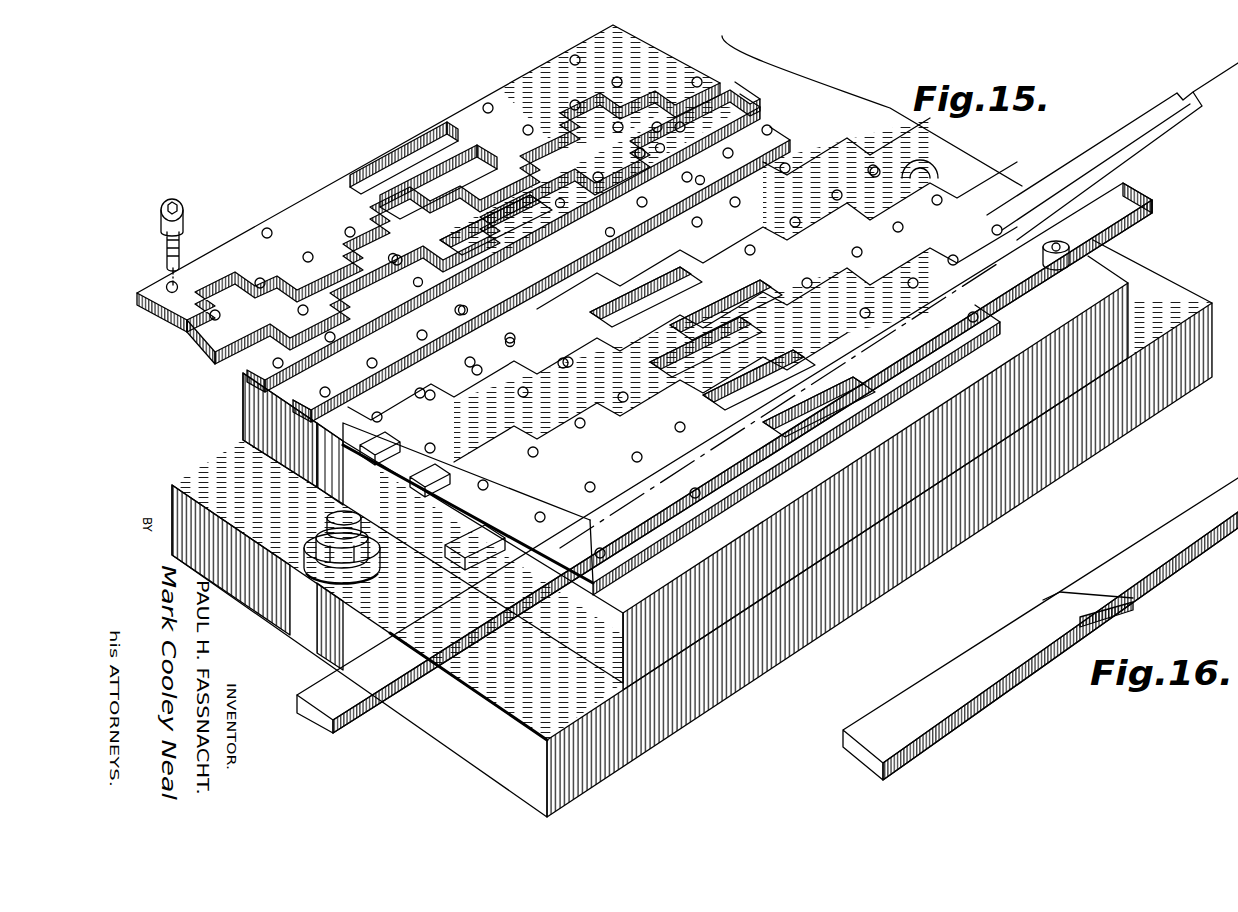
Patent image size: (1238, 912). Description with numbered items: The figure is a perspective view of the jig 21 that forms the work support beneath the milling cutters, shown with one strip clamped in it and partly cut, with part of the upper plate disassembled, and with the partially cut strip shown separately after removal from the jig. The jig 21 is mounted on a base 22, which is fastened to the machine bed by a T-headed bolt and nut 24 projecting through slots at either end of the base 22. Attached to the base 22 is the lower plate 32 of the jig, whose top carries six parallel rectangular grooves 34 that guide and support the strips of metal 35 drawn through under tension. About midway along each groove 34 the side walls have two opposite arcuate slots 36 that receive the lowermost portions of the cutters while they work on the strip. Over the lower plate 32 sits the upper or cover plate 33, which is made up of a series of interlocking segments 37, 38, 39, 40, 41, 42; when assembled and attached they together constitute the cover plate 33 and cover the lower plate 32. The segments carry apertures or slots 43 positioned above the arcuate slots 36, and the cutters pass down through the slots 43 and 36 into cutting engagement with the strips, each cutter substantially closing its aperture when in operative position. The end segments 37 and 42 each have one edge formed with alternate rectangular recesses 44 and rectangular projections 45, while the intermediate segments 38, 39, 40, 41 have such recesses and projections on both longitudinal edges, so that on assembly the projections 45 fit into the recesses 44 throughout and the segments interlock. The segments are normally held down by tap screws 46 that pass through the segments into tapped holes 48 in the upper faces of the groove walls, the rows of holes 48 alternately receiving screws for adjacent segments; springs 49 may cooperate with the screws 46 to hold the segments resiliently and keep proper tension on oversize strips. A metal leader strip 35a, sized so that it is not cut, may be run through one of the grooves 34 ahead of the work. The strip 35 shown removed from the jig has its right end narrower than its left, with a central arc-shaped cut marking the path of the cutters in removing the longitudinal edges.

In FIG. 15, the jig 21 is at (313, 417).
In FIG. 15, the base 22 is at (206, 470).
In FIG. 15, the T-headed bolt and nut 24 is at (316, 550).
In FIG. 15, the lower plate 32 is at (597, 657).
In FIG. 15, the upper or cover plate 33 is at (727, 513).
In FIG. 15, the grooves 34 is at (330, 422).
In FIG. 15, the strips of metal 35 is at (1140, 185).
In FIG. 16, the strips of metal 35 is at (950, 668).
In FIG. 15, the metal leader strip 35a is at (1130, 118).
In FIG. 15, the arcuate slots 36 is at (590, 245).
In FIG. 15, the end segment 37 is at (306, 210).
In FIG. 15, the intermediate segment 38 is at (479, 240).
In FIG. 15, the intermediate segment 39 is at (694, 270).
In FIG. 15, the intermediate segment 40 is at (682, 310).
In FIG. 15, the intermediate segment 41 is at (728, 361).
In FIG. 15, the end segment 42 is at (756, 430).
In FIG. 15, the apertures or slots 43 is at (465, 130).
In FIG. 15, the rectangular recesses 44 is at (315, 248).
In FIG. 15, the rectangular projections 45 is at (358, 252).
In FIG. 15, the tap screws 46 is at (183, 208).
In FIG. 15, the tapped holes 48 is at (458, 312).
In FIG. 15, the springs 49 is at (165, 283).